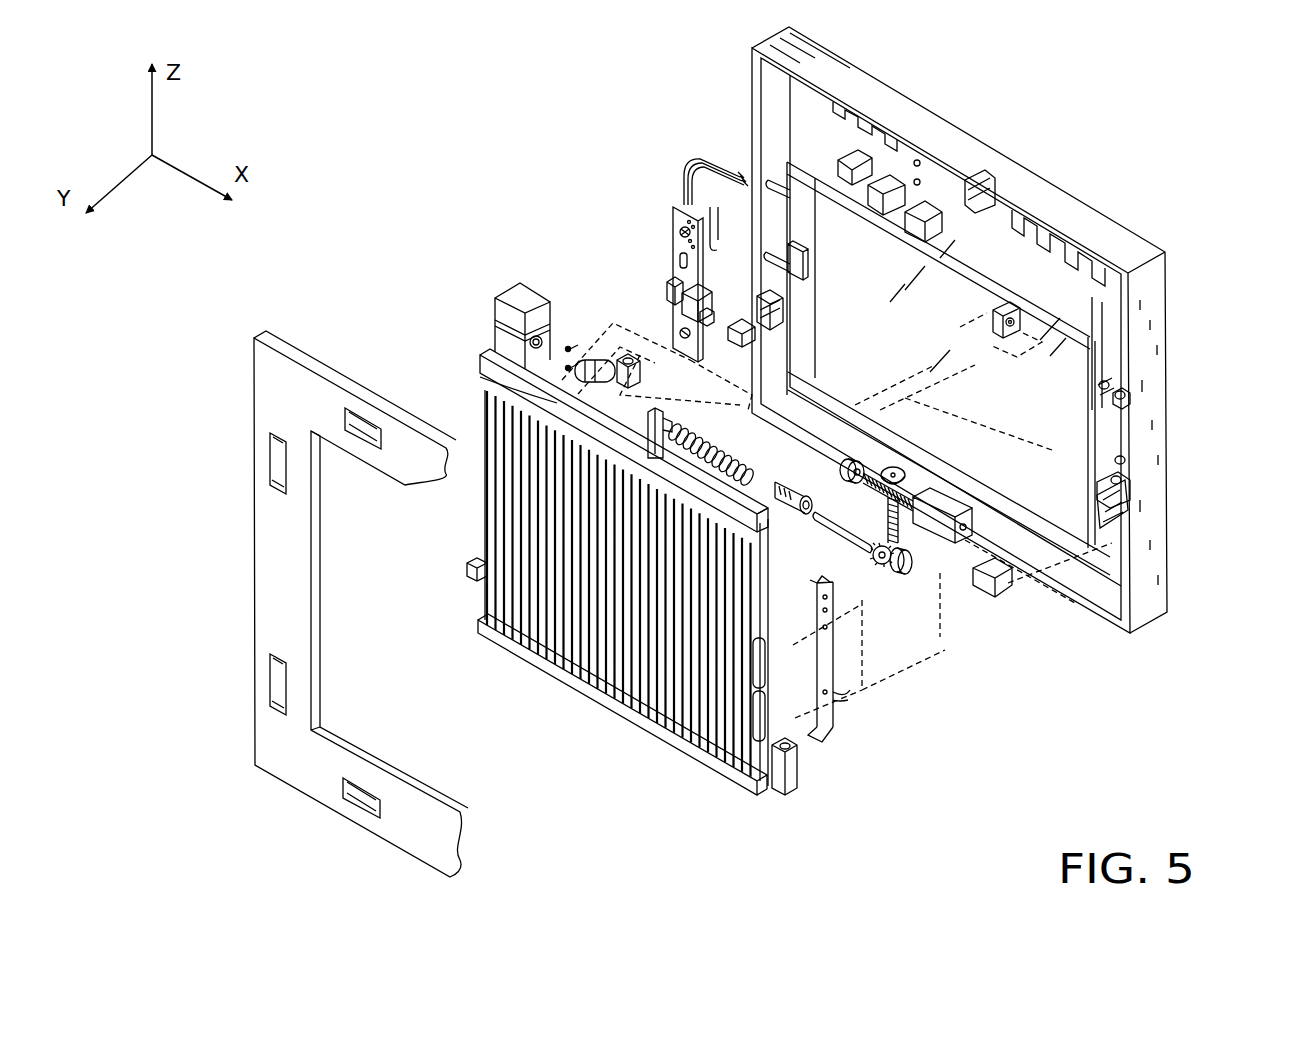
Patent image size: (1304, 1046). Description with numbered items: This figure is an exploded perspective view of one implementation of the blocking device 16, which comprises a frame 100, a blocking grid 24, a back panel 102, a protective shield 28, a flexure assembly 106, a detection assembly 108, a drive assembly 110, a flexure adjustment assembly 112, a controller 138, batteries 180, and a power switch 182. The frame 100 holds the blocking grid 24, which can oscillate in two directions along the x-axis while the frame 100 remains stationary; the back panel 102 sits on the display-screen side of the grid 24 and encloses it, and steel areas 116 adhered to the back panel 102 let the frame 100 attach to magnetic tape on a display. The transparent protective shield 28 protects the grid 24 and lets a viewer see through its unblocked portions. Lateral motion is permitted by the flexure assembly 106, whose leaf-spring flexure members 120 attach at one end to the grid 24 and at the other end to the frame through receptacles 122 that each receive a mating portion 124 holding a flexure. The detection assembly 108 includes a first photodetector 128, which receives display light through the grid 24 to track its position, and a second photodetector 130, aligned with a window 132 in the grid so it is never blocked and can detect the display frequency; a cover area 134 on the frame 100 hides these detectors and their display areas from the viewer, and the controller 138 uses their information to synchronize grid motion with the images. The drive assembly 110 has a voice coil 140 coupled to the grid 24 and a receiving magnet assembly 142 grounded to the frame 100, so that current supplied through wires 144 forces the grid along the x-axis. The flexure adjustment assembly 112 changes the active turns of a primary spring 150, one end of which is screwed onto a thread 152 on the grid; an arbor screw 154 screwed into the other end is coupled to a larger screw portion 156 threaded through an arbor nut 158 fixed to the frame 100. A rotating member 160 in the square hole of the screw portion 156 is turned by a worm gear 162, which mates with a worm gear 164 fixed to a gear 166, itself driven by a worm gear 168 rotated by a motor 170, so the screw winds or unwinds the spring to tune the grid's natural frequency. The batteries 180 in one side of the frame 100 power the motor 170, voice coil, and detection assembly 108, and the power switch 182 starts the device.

The blocking device 16 is at (556, 183).
The blocking grid 24 is at (602, 607).
The protective shield 28 is at (1068, 400).
The frame 100 is at (991, 330).
The back panel 102 is at (254, 372).
The flexure assembly 106 is at (792, 800).
The detection assembly 108 is at (668, 212).
The drive assembly 110 is at (537, 280).
The flexure adjustment assembly 112 is at (802, 478).
The steel areas 116 is at (266, 471).
The flexure members 120 is at (631, 355).
The receptacles 122 is at (980, 176).
The mating portion 124 is at (740, 345).
The first photodetector 128 is at (704, 298).
The second photodetector 130 is at (708, 318).
The window 132 is at (490, 522).
The cover area 134 is at (804, 266).
The controller 138 is at (672, 234).
The voice coil 140 is at (492, 373).
The receiving magnet assembly 142 is at (500, 357).
The wires 144 is at (571, 366).
The primary spring 150 is at (728, 442).
The thread 152 is at (660, 410).
The arbor screw 154 is at (786, 480).
The screw portion 156 is at (812, 486).
The arbor nut 158 is at (992, 308).
The rotating member 160 is at (815, 578).
The worm gear 162 is at (890, 560).
The worm gear 164 is at (852, 538).
The gear 166 is at (904, 466).
The worm gear 168 is at (953, 490).
The motor 170 is at (908, 568).
The batteries 180 is at (708, 758).
The power switch 182 is at (668, 290).